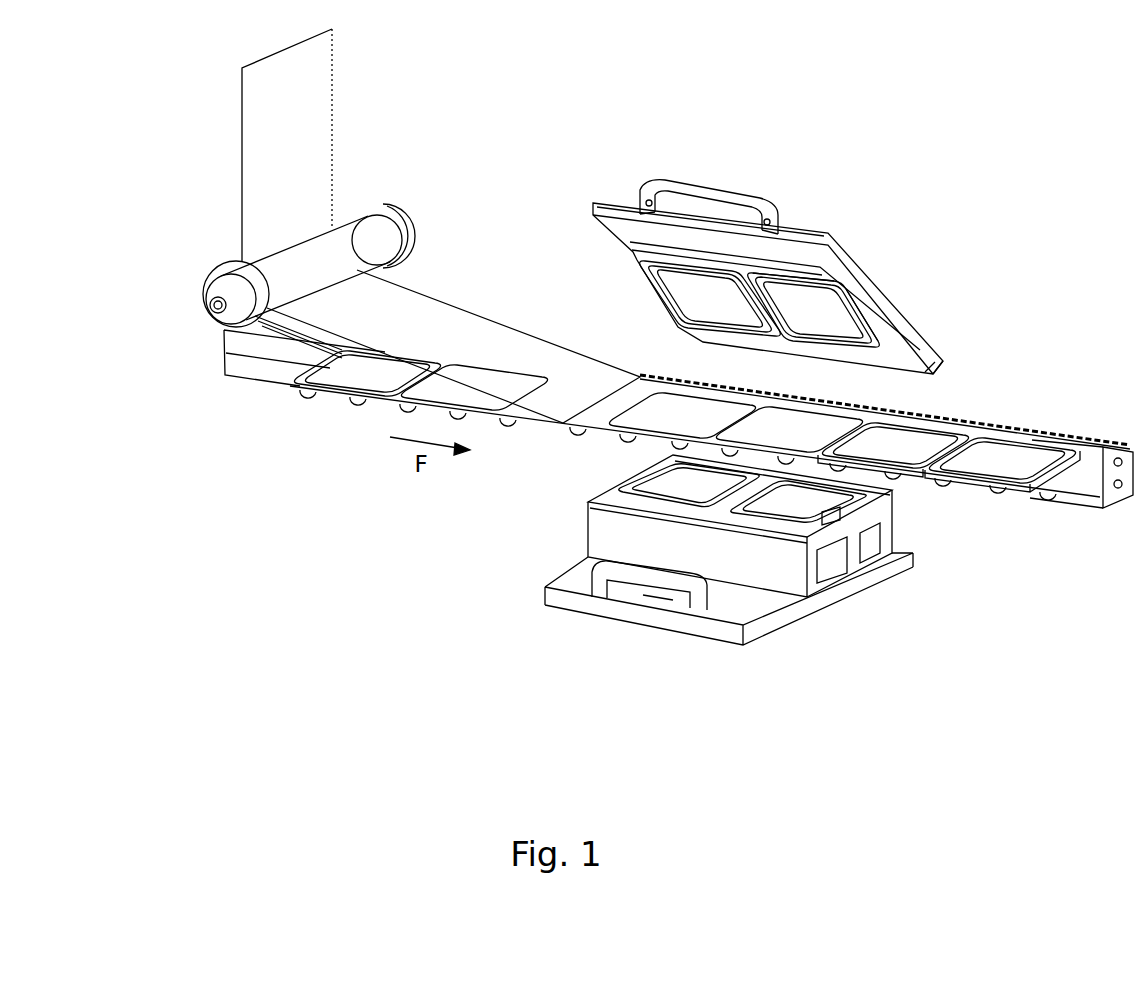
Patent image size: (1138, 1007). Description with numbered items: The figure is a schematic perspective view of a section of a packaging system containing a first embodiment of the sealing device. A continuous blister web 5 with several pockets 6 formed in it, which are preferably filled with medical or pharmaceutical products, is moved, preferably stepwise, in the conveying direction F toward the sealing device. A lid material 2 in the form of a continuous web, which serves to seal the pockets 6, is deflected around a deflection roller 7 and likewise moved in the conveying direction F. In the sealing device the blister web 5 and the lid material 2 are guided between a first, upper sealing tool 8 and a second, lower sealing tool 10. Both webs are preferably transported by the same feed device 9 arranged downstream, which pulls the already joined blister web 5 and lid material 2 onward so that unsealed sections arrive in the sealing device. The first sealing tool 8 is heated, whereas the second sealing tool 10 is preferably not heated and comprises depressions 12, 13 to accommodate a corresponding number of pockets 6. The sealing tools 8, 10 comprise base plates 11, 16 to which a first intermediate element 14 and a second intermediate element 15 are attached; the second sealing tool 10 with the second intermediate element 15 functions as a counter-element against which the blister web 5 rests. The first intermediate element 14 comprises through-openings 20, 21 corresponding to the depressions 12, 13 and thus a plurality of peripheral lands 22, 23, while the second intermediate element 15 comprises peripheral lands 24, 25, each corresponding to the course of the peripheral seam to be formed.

The lid material 2 is at (427, 327).
The blister web 5 is at (343, 397).
The pockets 6 is at (1003, 493).
The deflection roller 7 is at (352, 240).
The first sealing tool 8 is at (780, 219).
The feed device 9 is at (1087, 497).
The second sealing tool 10 is at (703, 575).
The base plate 11 is at (617, 208).
The depression 12 is at (677, 492).
The depression 13 is at (785, 510).
The first intermediate element 14 is at (810, 283).
The second intermediate element 15 is at (863, 502).
The base plate 16 is at (573, 588).
The through-opening 20 is at (688, 293).
The through-opening 21 is at (843, 337).
The peripheral land 22 is at (680, 268).
The peripheral land 23 is at (853, 317).
The peripheral land 24 is at (617, 500).
The peripheral land 25 is at (830, 517).